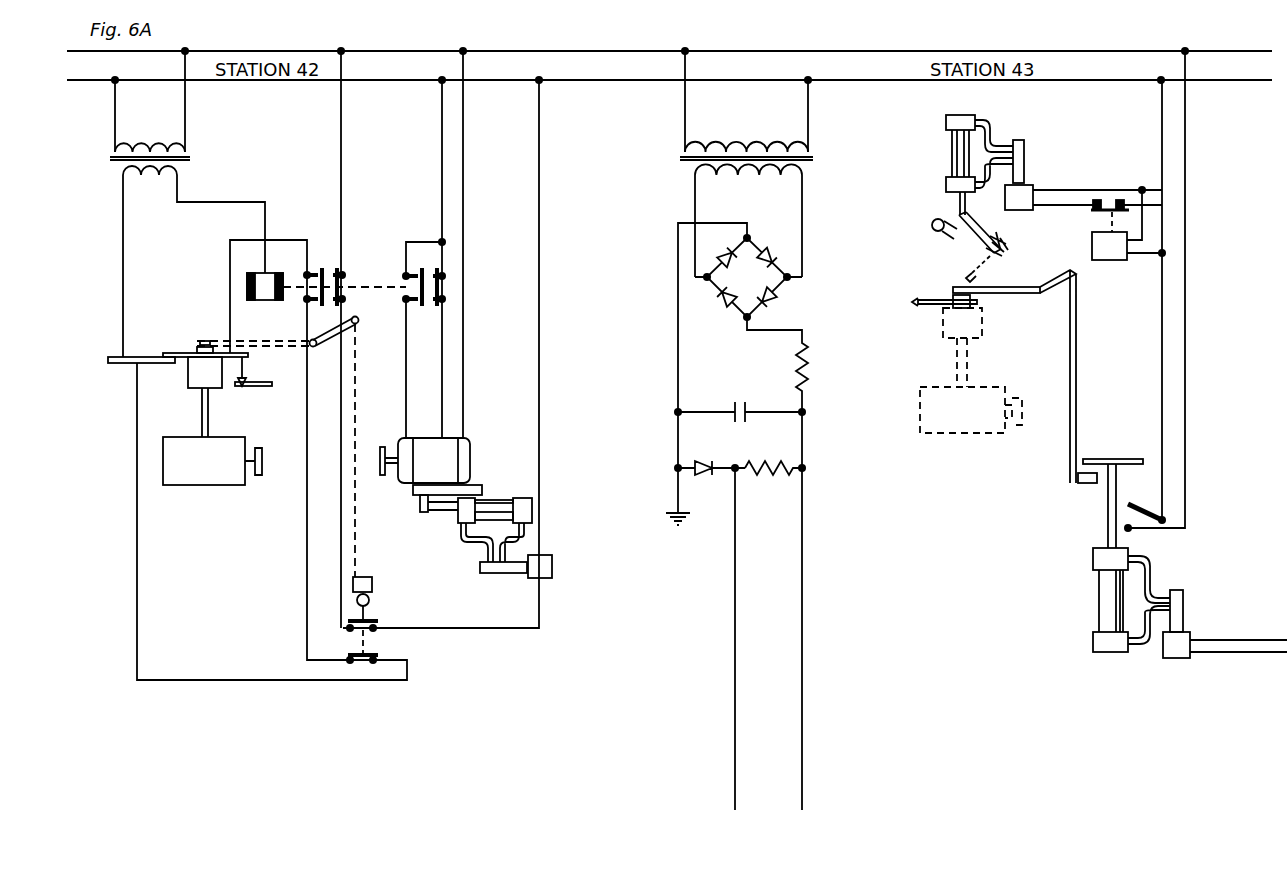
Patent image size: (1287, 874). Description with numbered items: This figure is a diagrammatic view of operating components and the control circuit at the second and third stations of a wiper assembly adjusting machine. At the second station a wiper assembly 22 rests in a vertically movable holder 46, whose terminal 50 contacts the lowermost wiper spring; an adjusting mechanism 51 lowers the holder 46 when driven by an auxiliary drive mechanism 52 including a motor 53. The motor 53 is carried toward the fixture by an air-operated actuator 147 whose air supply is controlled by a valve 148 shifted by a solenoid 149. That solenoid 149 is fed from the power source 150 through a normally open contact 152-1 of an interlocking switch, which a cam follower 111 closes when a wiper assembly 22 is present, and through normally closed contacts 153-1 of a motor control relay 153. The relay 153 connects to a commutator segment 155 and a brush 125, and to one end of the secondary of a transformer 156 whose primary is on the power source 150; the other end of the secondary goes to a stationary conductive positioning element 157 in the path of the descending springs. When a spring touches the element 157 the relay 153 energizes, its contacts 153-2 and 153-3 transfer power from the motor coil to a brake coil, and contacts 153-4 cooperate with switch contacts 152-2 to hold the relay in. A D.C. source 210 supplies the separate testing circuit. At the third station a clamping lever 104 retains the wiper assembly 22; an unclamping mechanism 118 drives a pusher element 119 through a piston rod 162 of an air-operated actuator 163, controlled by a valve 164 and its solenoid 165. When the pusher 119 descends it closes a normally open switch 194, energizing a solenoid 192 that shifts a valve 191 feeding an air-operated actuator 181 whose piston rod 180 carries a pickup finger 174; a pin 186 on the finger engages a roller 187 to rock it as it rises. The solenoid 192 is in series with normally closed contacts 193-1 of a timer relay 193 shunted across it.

The source of power 150 is at (573, 80).
The transformer 156 is at (192, 158).
The motor control relay 153 is at (258, 287).
The normally closed contacts of motor control relay 153-1 is at (362, 262).
The normally closed contacts of motor control relay 153-2 is at (440, 288).
The normally open contacts of motor control relay 153-3 is at (372, 303).
The normally open contacts of motor control relay 153-4 is at (322, 268).
The wiper assembly 22 is at (164, 352).
The terminal 50 is at (240, 352).
The conductive positioning element 157 is at (124, 364).
The holder 46 is at (188, 375).
The brush 125 is at (234, 368).
The commutator segment 155 is at (258, 386).
The adjusting mechanism 51 is at (171, 422).
The auxiliary drive mechanism 52 is at (479, 437).
The motor 53 is at (455, 460).
The air-operated actuator 147 is at (500, 505).
The valve 148 is at (496, 574).
The solenoid 149 is at (552, 568).
The cam follower 111 is at (372, 580).
The normally open contact of interlocking switch 152-1 is at (378, 620).
The normally open contacts of interlocking switch 152-2 is at (366, 665).
The D.C. source 210 is at (735, 522).
The air-operated actuator 181 is at (955, 155).
The valve 191 is at (1020, 163).
The solenoid 192 is at (1026, 195).
The normally closed contacts of timer relay 193-1 is at (1110, 205).
The timer relay 193 is at (1102, 262).
The piston rod 180 is at (958, 205).
The roller 187 is at (933, 221).
The pin 186 is at (934, 231).
The pickup finger 174 is at (968, 244).
The clamping lever 104 is at (1005, 292).
The pusher element 119 is at (1108, 458).
The piston rod 162 is at (1110, 513).
The normally open switch 194 is at (1145, 512).
The unclamping mechanism 118 is at (1082, 586).
The air-operated actuator 163 is at (1100, 614).
The valve 164 is at (1184, 614).
The solenoid 165 is at (1176, 660).